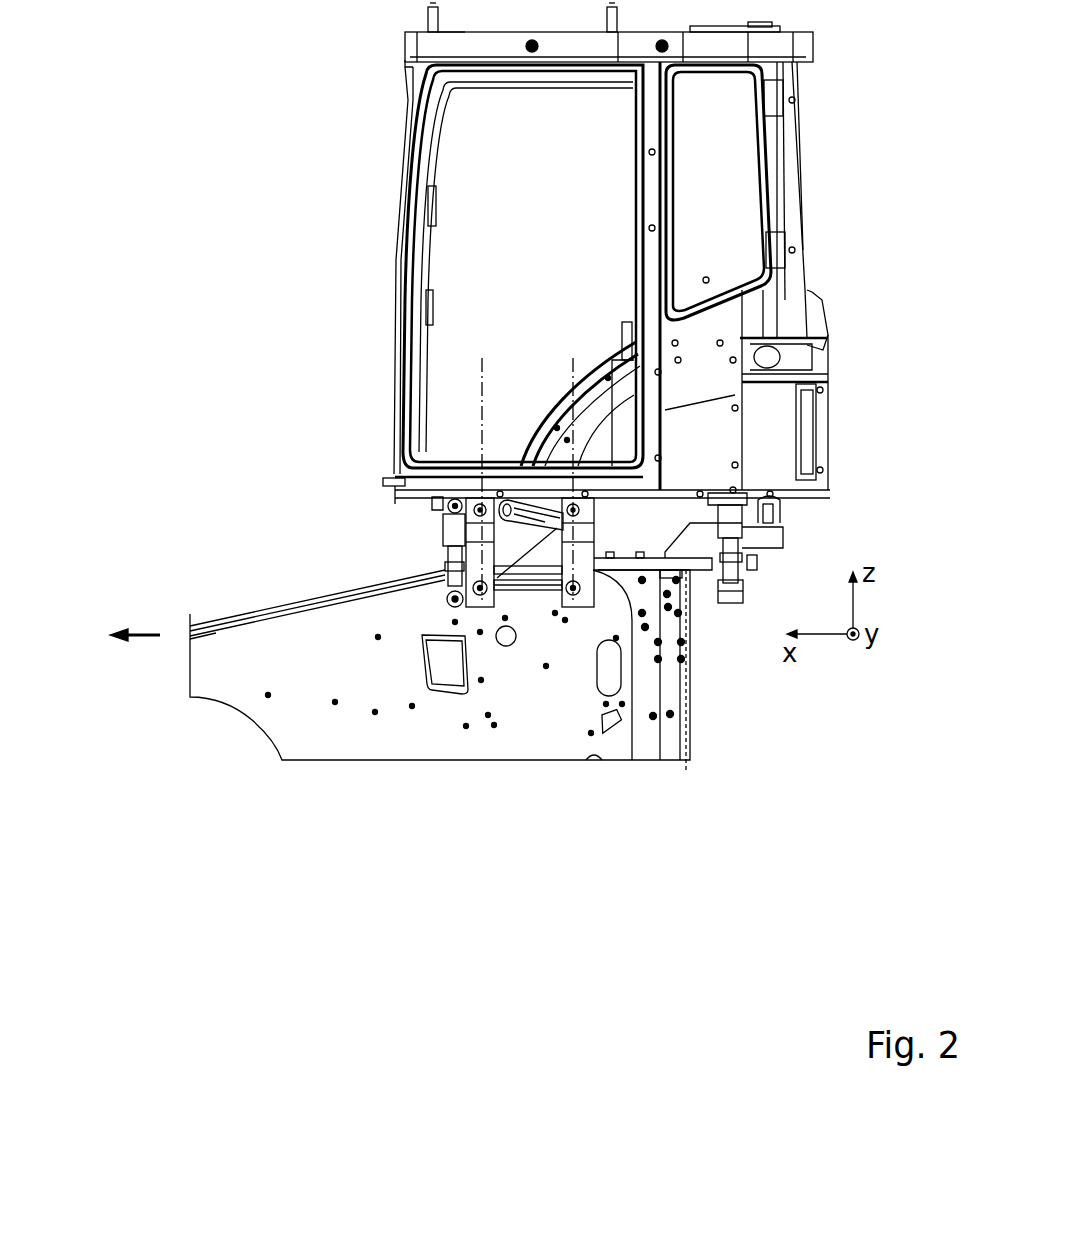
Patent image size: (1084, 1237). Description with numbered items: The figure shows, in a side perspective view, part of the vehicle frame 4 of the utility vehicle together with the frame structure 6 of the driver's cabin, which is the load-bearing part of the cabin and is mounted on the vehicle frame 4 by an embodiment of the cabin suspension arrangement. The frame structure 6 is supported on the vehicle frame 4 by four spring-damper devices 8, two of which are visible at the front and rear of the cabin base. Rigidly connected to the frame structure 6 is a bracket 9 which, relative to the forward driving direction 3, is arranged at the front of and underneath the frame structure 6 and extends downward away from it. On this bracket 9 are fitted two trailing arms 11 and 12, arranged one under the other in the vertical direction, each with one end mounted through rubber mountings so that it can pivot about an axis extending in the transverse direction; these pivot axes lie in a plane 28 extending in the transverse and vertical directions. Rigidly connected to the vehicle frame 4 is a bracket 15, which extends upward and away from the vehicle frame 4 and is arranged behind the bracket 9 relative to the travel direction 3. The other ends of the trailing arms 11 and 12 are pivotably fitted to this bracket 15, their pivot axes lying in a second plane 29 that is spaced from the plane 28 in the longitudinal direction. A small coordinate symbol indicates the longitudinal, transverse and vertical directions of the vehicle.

The forward driving direction 3 is at (150, 632).
The vehicle frame 4 is at (270, 655).
The frame structure 6 is at (782, 183).
The spring-damper device 8 is at (444, 533).
The bracket 9 is at (478, 600).
The trailing arm 11 is at (516, 470).
The trailing arm 12 is at (528, 595).
The bracket 15 is at (585, 600).
The plane 28 is at (482, 378).
The plane 29 is at (573, 358).